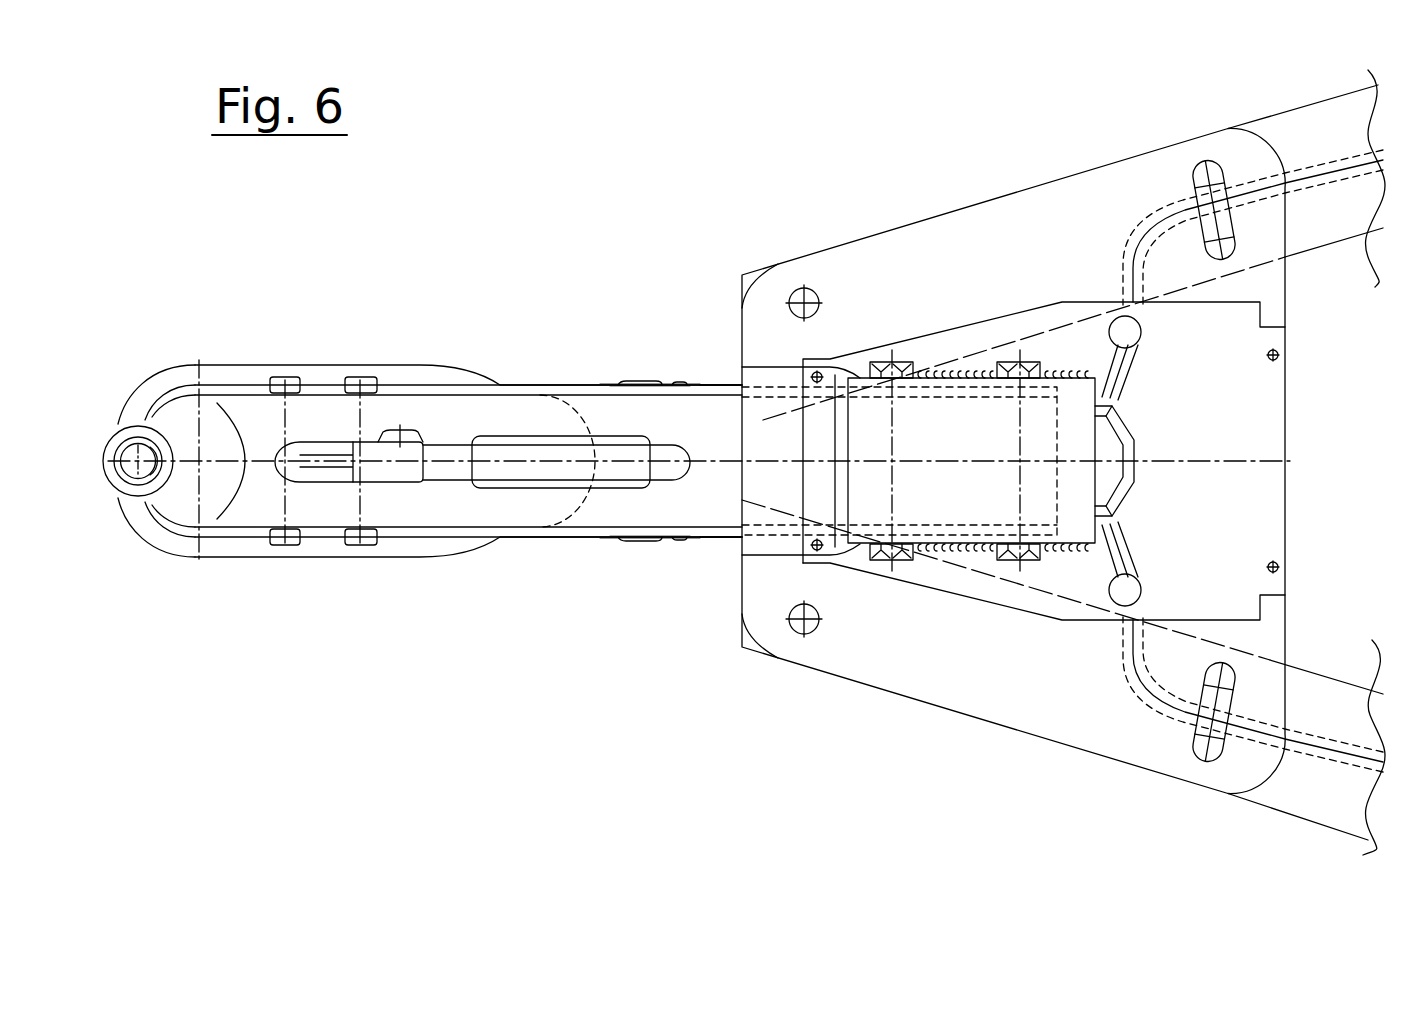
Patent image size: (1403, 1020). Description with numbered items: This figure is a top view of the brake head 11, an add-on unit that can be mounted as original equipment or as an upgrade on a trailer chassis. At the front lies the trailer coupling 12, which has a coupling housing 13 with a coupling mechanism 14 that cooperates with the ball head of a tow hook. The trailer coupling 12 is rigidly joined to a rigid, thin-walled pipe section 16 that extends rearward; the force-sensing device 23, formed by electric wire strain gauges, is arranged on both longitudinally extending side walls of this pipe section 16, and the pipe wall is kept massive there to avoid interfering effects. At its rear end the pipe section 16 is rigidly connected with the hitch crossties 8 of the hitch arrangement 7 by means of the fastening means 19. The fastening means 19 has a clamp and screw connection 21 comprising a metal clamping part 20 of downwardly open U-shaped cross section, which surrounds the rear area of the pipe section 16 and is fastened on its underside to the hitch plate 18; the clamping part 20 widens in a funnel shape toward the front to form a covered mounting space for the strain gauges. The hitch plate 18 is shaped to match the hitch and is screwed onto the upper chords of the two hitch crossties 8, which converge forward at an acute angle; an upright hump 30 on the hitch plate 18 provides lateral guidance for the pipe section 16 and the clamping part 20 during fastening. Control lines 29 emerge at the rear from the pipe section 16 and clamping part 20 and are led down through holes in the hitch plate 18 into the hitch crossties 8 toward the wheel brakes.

The hitch arrangement 7 is at (1365, 608).
The hitch crossties 8 is at (1335, 240).
The brake head 11 is at (422, 443).
The trailer coupling 12 is at (331, 412).
The coupling housing 13 is at (168, 548).
The coupling mechanism 14 is at (390, 467).
The pipe section 16 is at (713, 385).
The hitch plate 18 is at (850, 680).
The fastening means 19 is at (1055, 353).
The clamping part 20 is at (973, 497).
The clamp and screw connection 21 is at (1019, 368).
The force-sensing device 23 is at (642, 382).
The control lines 29 is at (1130, 365).
The hump 30 is at (1135, 488).